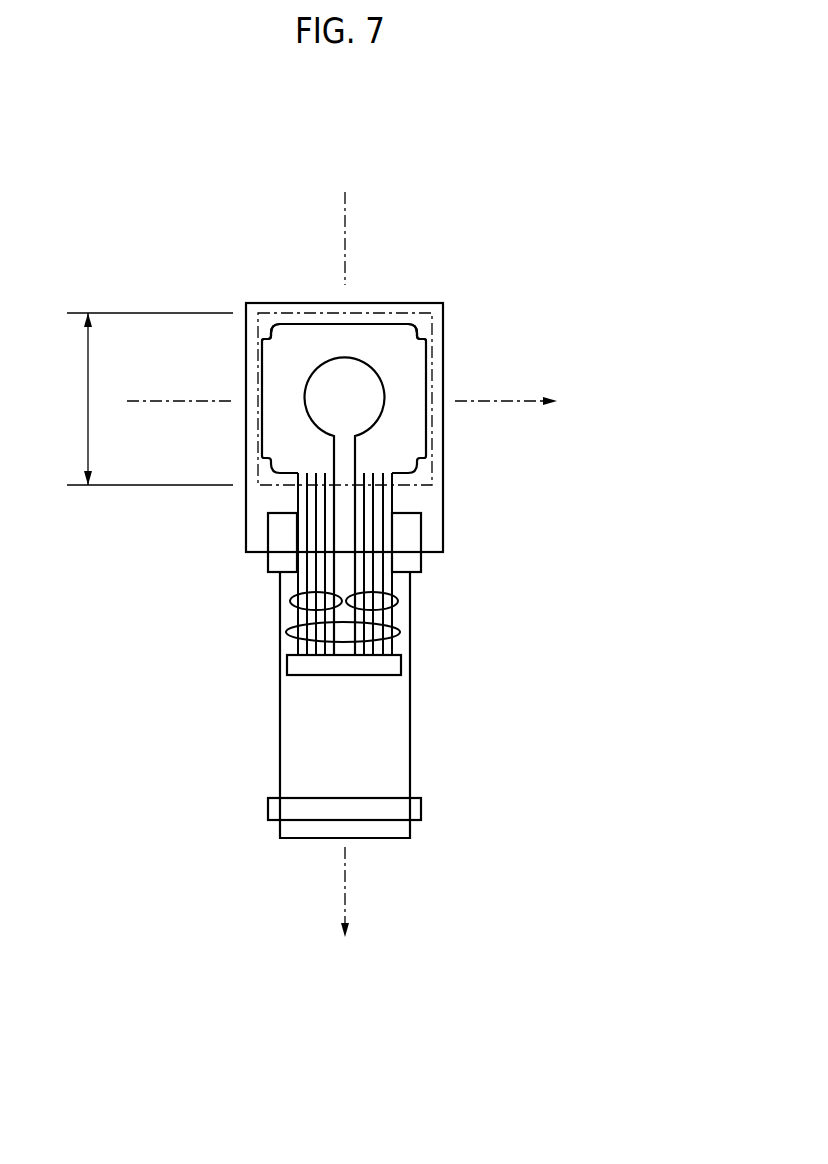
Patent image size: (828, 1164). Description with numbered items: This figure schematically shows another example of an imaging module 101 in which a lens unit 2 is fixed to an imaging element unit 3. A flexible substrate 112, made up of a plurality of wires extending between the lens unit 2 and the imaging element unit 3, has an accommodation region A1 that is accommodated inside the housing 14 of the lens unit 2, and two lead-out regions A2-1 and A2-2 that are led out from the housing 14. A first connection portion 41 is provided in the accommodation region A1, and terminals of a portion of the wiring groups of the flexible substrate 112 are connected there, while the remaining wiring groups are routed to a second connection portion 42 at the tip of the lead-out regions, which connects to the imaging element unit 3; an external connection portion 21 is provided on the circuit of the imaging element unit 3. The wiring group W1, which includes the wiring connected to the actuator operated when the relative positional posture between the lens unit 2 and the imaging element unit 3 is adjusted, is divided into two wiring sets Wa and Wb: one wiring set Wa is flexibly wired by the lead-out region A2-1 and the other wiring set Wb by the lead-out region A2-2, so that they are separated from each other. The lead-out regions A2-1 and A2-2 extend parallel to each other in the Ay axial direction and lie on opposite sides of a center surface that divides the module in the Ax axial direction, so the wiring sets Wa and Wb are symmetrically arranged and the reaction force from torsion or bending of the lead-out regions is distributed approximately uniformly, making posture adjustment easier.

The imaging module 101 is at (420, 515).
The imaging element unit 3 is at (446, 282).
The lens unit 2 is at (388, 296).
The flexible substrate 112 is at (311, 308).
The housing 14 is at (270, 311).
The first connection portion 41 is at (266, 333).
The external connection portion 21 is at (310, 807).
The wiring group W1 is at (290, 633).
The lead-out region A2-1 is at (297, 580).
The lead-out region A2-2 is at (392, 583).
The wiring set Wa is at (291, 602).
The wiring set Wb is at (398, 605).
The second connection portion 42 is at (377, 675).
The accommodation region A1 is at (145, 399).
The Ax axis Ax is at (359, 400).
The Ay axis Ay is at (344, 596).